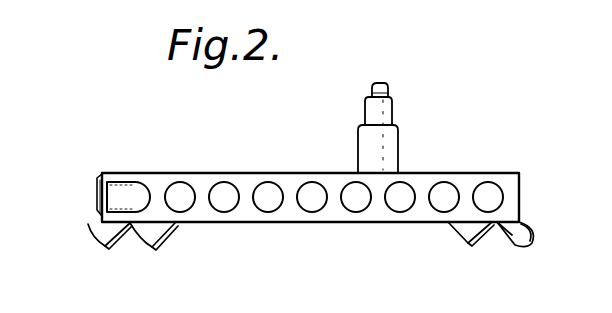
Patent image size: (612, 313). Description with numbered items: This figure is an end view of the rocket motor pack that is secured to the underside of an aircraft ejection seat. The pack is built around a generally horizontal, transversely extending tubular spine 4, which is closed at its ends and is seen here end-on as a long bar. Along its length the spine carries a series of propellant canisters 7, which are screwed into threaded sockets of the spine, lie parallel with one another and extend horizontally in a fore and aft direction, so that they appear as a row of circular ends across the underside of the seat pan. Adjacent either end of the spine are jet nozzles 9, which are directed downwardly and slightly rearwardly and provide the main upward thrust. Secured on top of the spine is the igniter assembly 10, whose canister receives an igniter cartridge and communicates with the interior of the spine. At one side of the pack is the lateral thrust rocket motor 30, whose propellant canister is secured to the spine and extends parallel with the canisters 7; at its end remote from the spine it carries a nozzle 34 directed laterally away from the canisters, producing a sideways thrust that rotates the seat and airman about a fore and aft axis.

The tubular spine 4 is at (478, 173).
The canisters 7 is at (187, 190).
The jet nozzles 9 is at (105, 247).
The igniter assembly 10 is at (403, 139).
The lateral thrust rocket motor 30 is at (132, 186).
The nozzle 34 is at (98, 193).